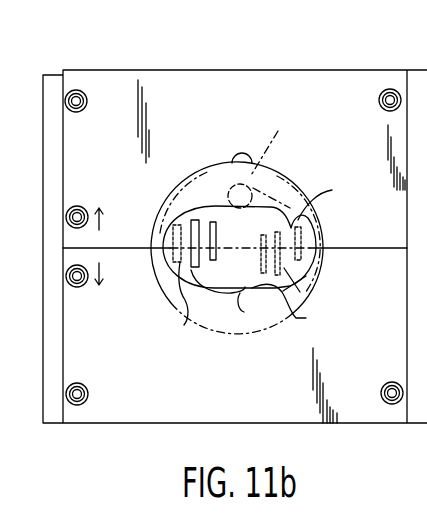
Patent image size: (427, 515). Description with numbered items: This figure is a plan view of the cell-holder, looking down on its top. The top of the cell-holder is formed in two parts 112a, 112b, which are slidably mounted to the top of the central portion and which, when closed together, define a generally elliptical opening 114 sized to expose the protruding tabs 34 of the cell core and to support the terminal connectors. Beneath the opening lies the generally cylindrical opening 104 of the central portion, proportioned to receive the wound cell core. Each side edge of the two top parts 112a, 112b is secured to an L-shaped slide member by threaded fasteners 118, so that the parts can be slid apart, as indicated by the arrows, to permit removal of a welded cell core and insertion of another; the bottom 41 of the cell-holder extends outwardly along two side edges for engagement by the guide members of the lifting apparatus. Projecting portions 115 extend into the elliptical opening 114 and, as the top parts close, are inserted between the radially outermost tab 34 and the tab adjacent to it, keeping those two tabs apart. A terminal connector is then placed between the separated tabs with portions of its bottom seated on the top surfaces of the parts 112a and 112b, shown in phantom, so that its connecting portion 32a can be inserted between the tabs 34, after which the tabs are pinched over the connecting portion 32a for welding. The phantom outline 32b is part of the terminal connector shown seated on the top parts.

The bottom 41 is at (48, 92).
The threaded fasteners 118 is at (85, 98).
The top part 112a is at (226, 124).
The top part 112b is at (133, 367).
The cylindrical opening 104 is at (277, 161).
The rotary cam disc (phantom) 32b is at (268, 165).
The connecting portion 32a is at (167, 200).
The tab portions 34 is at (160, 231).
The projecting portions 115 is at (190, 316).
The elliptical opening 114 is at (300, 320).